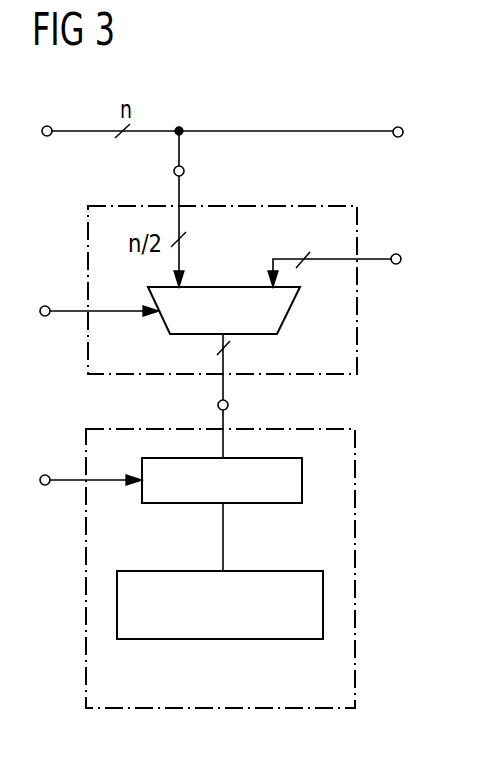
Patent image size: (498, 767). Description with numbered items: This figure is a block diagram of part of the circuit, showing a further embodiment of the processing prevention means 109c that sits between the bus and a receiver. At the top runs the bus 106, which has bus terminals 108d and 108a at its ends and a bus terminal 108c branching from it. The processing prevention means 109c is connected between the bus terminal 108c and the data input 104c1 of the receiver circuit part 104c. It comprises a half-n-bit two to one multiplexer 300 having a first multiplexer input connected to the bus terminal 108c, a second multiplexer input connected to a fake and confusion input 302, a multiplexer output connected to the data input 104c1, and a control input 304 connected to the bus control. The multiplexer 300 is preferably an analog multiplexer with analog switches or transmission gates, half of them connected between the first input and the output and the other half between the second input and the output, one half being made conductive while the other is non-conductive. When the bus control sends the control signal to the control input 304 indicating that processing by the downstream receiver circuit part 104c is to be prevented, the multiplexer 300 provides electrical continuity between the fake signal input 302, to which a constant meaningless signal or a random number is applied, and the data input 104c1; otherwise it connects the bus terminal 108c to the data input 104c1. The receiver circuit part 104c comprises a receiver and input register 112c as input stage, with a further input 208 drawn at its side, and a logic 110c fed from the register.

The bus 106 is at (300, 131).
The bus terminal 108a is at (398, 127).
The bus terminal 108c is at (184, 171).
The bus terminal 108d is at (47, 126).
The processing prevention means 109c is at (357, 312).
The n/2 bit 2 to 1 multiplexer 300 is at (223, 285).
The fake and confusion input 302 is at (396, 254).
The control input 304 is at (45, 316).
The data input 104c1 is at (228, 405).
The receiver circuit part 104c is at (355, 563).
The control input 208 is at (45, 475).
The receiver and input register 112c is at (267, 503).
The logic 110c is at (223, 641).